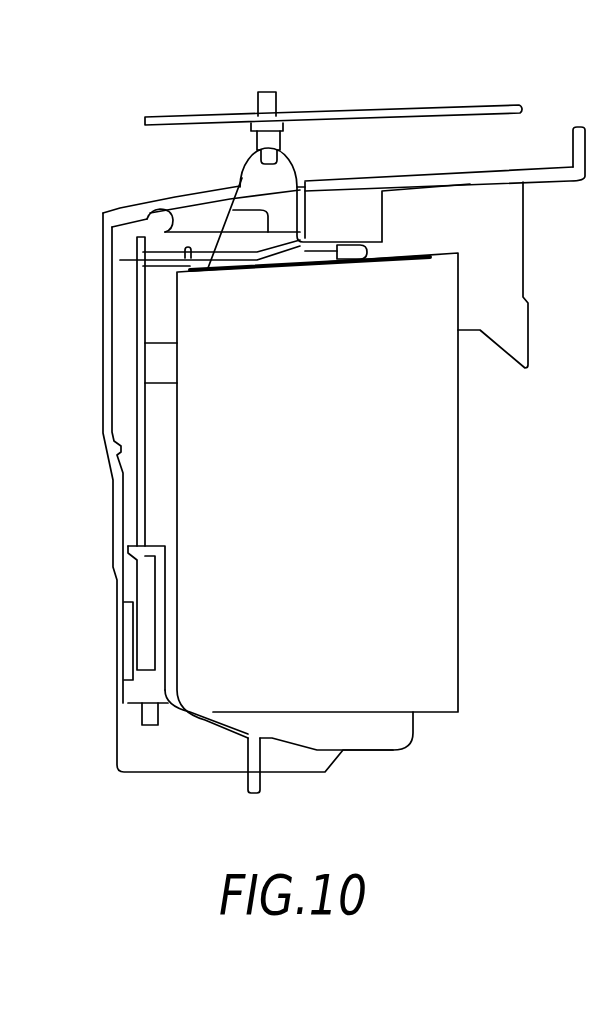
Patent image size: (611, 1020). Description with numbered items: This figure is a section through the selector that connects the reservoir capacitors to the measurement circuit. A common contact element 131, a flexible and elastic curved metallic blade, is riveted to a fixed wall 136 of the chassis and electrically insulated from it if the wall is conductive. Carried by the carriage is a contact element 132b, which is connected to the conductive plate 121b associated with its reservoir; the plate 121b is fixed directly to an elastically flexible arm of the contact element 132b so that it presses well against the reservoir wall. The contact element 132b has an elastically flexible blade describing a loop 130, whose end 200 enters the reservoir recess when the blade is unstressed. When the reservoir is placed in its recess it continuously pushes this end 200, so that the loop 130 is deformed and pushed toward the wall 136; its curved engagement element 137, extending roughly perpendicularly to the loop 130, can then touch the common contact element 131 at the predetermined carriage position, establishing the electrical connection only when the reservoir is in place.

The loop 130 is at (271, 163).
The common contact element 131 is at (257, 144).
The wall 136 is at (377, 110).
The curved engagement element 137 is at (298, 162).
The contact element 132b is at (237, 183).
The end 200 is at (200, 274).
The plate 121b is at (348, 263).